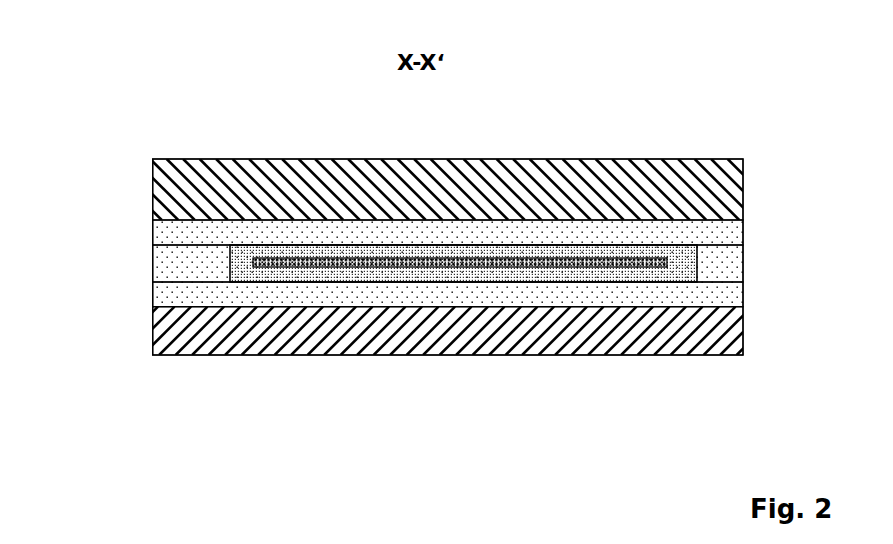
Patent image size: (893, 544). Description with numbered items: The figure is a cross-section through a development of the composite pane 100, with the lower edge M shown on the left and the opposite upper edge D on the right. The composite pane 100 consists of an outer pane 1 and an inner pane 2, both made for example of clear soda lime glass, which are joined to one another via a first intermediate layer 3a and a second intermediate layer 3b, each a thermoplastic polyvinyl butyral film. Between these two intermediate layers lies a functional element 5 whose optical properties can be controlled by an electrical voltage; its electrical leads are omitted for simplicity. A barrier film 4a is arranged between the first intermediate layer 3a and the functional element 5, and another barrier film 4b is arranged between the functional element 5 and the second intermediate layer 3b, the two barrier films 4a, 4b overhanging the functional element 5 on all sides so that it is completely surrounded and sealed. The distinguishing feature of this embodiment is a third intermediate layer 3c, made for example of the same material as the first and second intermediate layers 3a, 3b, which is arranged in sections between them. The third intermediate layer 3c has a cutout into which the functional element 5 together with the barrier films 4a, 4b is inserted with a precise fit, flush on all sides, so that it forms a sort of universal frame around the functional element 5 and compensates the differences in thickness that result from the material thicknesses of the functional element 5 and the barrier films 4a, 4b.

The composite pane 100 is at (192, 87).
The outer pane 1 is at (164, 159).
The inner pane 2 is at (229, 347).
The first intermediate layer 3a is at (718, 237).
The second intermediate layer 3b is at (730, 293).
The third intermediate layer 3c is at (725, 262).
The barrier film 4a is at (230, 258).
The barrier film 4b is at (230, 272).
The functional element 5 is at (517, 265).
The lower edge M is at (150, 173).
The upper edge D is at (743, 178).